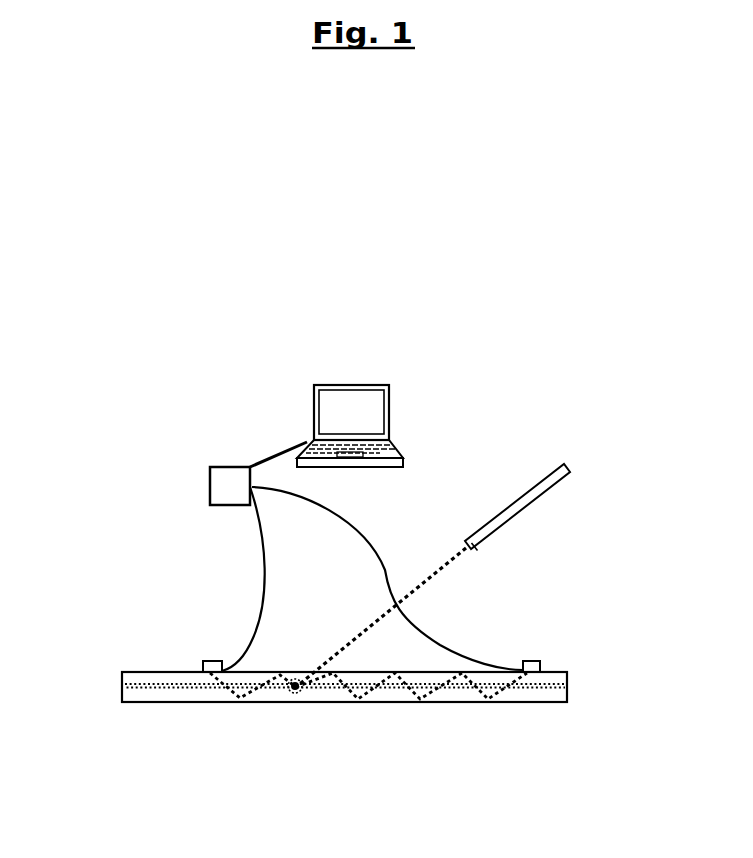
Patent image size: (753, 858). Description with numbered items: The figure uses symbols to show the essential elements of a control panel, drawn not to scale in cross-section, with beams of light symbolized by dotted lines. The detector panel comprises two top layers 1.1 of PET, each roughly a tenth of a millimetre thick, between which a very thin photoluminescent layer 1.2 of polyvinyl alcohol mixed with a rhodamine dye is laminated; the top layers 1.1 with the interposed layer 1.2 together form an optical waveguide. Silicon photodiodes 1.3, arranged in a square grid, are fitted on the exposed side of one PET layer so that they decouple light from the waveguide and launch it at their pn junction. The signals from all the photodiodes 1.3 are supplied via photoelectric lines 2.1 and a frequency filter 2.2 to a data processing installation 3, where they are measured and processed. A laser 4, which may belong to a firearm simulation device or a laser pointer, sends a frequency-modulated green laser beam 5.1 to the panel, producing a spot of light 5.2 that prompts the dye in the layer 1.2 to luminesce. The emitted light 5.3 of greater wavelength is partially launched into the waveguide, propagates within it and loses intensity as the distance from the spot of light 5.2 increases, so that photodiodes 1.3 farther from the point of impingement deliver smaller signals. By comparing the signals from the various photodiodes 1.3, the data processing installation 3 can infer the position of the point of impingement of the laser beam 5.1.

The top layers 1.1 is at (130, 694).
The photoluminescent layer 1.2 is at (567, 688).
The silicon photodiodes 1.3 is at (203, 668).
The photoelectric lines 2.1 is at (258, 615).
The frequency filter 2.2 is at (212, 497).
The data processing installation 3 is at (318, 398).
The laser 4 is at (538, 483).
The laser beam 5.1 is at (440, 570).
The spot of light 5.2 is at (293, 690).
The emitted light 5.3 is at (346, 690).